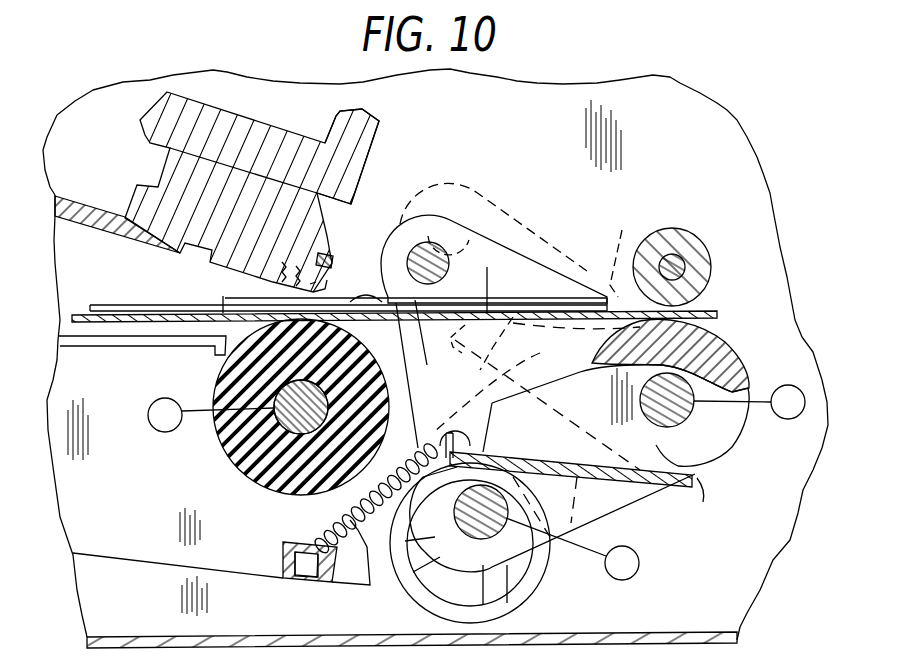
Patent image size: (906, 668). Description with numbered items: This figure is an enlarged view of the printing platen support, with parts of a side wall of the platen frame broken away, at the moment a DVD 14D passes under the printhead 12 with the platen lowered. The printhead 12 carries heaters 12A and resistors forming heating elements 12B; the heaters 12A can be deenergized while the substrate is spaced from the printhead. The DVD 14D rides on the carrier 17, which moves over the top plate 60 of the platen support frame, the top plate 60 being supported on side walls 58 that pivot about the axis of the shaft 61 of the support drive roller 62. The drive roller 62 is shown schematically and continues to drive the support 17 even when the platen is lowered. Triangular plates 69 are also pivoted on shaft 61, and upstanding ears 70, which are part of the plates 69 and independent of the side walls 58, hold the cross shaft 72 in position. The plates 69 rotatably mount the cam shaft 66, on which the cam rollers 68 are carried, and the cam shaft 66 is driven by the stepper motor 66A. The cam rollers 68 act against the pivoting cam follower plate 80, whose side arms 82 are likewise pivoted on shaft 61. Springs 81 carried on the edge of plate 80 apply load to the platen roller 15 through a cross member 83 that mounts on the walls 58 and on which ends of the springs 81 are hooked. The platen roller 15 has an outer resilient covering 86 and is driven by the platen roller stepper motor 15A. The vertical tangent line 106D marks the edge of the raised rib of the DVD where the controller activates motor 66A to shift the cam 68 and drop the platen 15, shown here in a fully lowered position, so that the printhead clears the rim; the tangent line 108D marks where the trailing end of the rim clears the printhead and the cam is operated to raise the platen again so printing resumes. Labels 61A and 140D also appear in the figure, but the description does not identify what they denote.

The printhead 12 is at (183, 230).
The heaters 12A is at (340, 250).
The resistors forming heating elements 12B is at (213, 261).
The DVD 14D is at (98, 305).
The tangent line 108D is at (222, 289).
The tangent line 106D is at (487, 278).
The carrier 17 is at (92, 328).
The top plate 60 is at (90, 328).
The upstanding ears 70 is at (480, 263).
The cross shaft 72 is at (437, 258).
The triangular plates 69 is at (583, 281).
The support arm 140D is at (437, 374).
The platen roller 15 is at (222, 443).
The outer resilient covering 86 is at (228, 377).
The platen roller stepper motor 15A is at (150, 427).
The shaft 61 is at (680, 415).
The drive roller 62 is at (708, 350).
The cam motor 61A is at (780, 420).
The side arms 82 is at (577, 495).
The cam follower plate 80 is at (512, 452).
The cam rollers 68 is at (520, 598).
The cross shaft 66 is at (508, 506).
The stepper motor 66A is at (640, 555).
The springs 81 is at (345, 498).
The cross member 83 is at (283, 558).
The side walls 58 is at (132, 545).